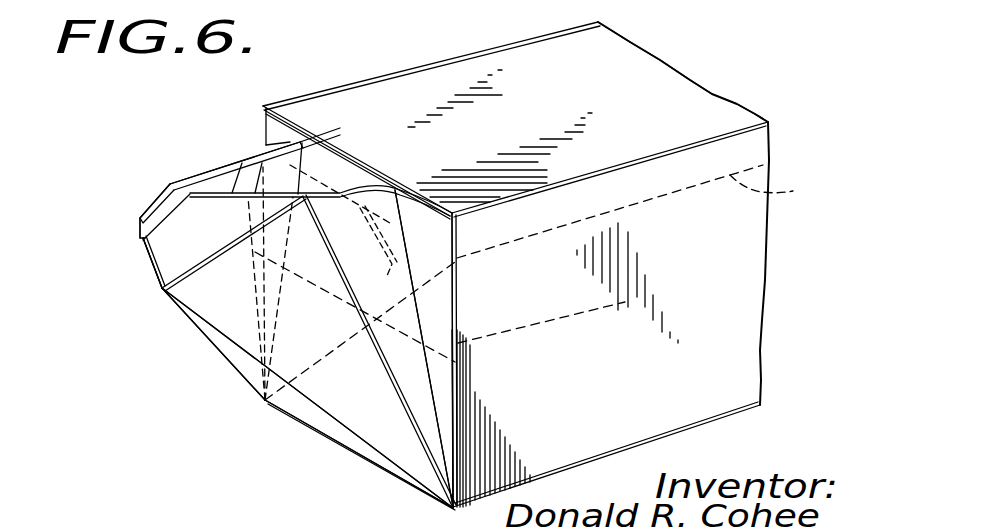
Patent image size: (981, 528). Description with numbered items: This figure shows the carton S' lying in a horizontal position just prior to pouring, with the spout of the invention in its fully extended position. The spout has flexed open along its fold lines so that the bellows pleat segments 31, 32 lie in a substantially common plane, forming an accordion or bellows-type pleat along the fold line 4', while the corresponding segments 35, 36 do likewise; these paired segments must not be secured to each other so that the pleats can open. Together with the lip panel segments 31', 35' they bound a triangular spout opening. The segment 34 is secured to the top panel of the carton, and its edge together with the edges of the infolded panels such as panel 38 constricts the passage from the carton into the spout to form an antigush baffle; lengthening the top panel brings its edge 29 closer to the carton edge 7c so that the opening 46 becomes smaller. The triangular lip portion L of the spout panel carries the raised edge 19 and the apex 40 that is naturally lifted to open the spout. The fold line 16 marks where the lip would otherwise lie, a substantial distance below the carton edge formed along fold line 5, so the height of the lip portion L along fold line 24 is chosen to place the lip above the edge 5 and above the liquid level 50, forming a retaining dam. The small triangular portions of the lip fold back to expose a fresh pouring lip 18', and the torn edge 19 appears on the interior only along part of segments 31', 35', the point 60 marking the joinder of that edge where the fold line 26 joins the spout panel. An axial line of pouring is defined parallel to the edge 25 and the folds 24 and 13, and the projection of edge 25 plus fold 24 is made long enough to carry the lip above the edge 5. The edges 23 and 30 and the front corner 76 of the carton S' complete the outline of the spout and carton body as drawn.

The carton S' is at (516, 264).
The fold line 5 is at (646, 160).
The liquid level 50 is at (636, 211).
The front vertical edge 76 is at (460, 408).
The edge 29 is at (460, 300).
The fold line 26 is at (413, 257).
The segment 34 is at (443, 281).
The point 60 is at (285, 135).
The infolded panel 38 is at (270, 130).
The lip panel segment 35' is at (240, 175).
The edge 19 is at (177, 180).
The pouring lip 18' is at (141, 197).
The lip portion L is at (185, 243).
The segment 35 is at (272, 247).
The fold line 13 is at (140, 233).
The apex 40 is at (146, 249).
The fold line 24 is at (150, 258).
The segment 36 is at (284, 188).
The lip panel segment 31' is at (234, 283).
The segment 31 is at (253, 298).
The fold line 16 is at (205, 265).
The bottom edge 23 is at (207, 340).
The edge 25 is at (250, 357).
The lower edge 30 is at (283, 412).
The opening 46 is at (363, 413).
The edge 7c is at (385, 470).
The segment 32 is at (399, 307).
The fold line 4' is at (355, 326).